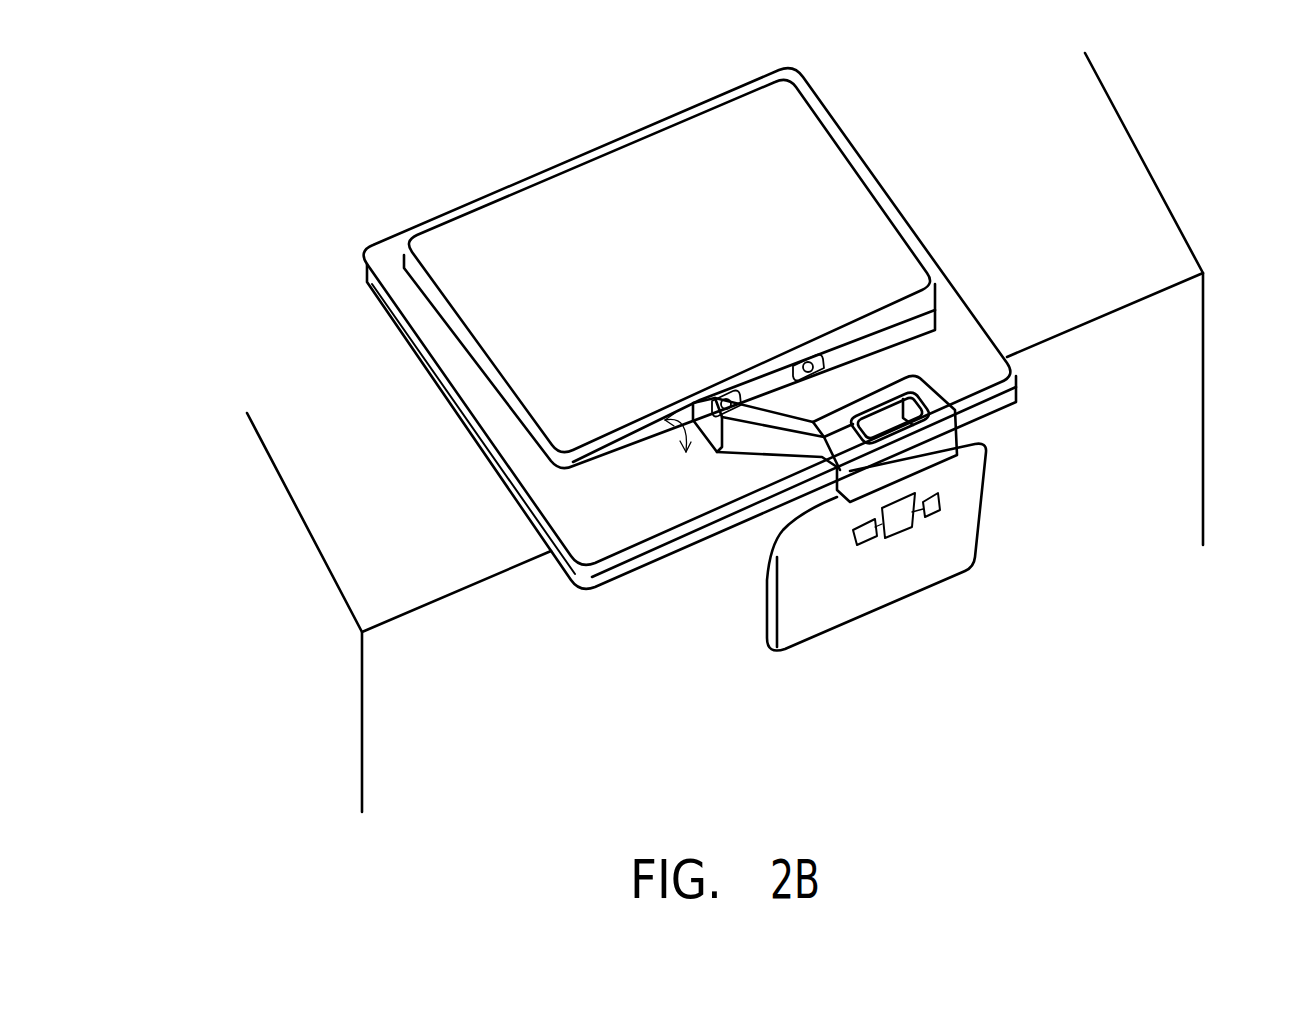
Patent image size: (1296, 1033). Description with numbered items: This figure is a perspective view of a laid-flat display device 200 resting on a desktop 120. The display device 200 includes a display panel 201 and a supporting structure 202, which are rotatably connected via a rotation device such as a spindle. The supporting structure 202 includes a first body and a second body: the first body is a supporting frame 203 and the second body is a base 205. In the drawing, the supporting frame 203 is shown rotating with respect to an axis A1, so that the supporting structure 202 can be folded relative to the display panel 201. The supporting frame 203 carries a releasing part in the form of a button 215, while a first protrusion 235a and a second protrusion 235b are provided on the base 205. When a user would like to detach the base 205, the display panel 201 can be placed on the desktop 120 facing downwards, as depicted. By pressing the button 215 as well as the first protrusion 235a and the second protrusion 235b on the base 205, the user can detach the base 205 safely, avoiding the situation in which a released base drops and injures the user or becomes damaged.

The desktop 120 is at (1093, 187).
The display device 200 is at (552, 208).
The display panel 201 is at (837, 185).
The supporting structure 202 is at (1102, 240).
The supporting frame 203 is at (870, 383).
The base 205 is at (935, 457).
The button 215 is at (905, 525).
The first protrusion 235a is at (869, 531).
The second protrusion 235b is at (933, 508).
The axis A1 is at (665, 451).